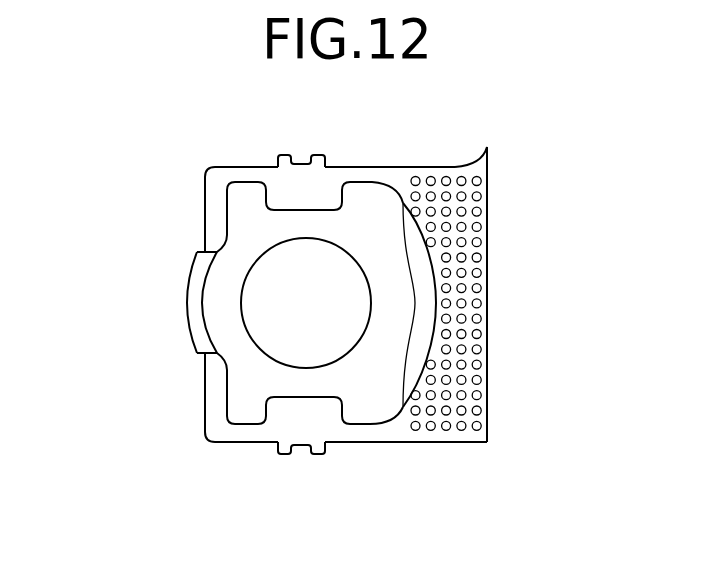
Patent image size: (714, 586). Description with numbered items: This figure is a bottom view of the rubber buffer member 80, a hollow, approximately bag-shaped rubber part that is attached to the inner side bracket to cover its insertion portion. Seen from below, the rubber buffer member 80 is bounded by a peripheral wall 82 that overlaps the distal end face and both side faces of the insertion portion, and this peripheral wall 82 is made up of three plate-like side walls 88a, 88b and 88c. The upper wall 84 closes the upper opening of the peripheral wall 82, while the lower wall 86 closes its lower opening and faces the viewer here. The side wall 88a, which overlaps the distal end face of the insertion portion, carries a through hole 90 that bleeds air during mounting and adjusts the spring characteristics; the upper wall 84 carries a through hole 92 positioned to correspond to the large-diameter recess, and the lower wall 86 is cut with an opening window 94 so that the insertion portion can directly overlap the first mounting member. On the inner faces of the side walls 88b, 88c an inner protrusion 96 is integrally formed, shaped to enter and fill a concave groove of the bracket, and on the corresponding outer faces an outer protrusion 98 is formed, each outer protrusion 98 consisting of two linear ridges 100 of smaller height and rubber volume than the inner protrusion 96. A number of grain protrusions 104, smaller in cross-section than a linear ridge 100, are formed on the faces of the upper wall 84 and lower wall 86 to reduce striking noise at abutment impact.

The rubber buffer member 80 is at (522, 128).
The peripheral wall 82 is at (200, 206).
The upper wall 84 is at (246, 193).
The lower wall 86 is at (470, 298).
The side wall 88a is at (207, 378).
The side wall 88b is at (362, 171).
The side wall 88c is at (357, 434).
The through hole 90 is at (193, 272).
The through hole 92 is at (246, 277).
The opening window 94 is at (437, 313).
The inner protrusion 96 is at (327, 203).
The outer protrusion 98 is at (277, 152).
The linear ridge 100 is at (283, 153).
The grain protrusion 104 is at (441, 276).